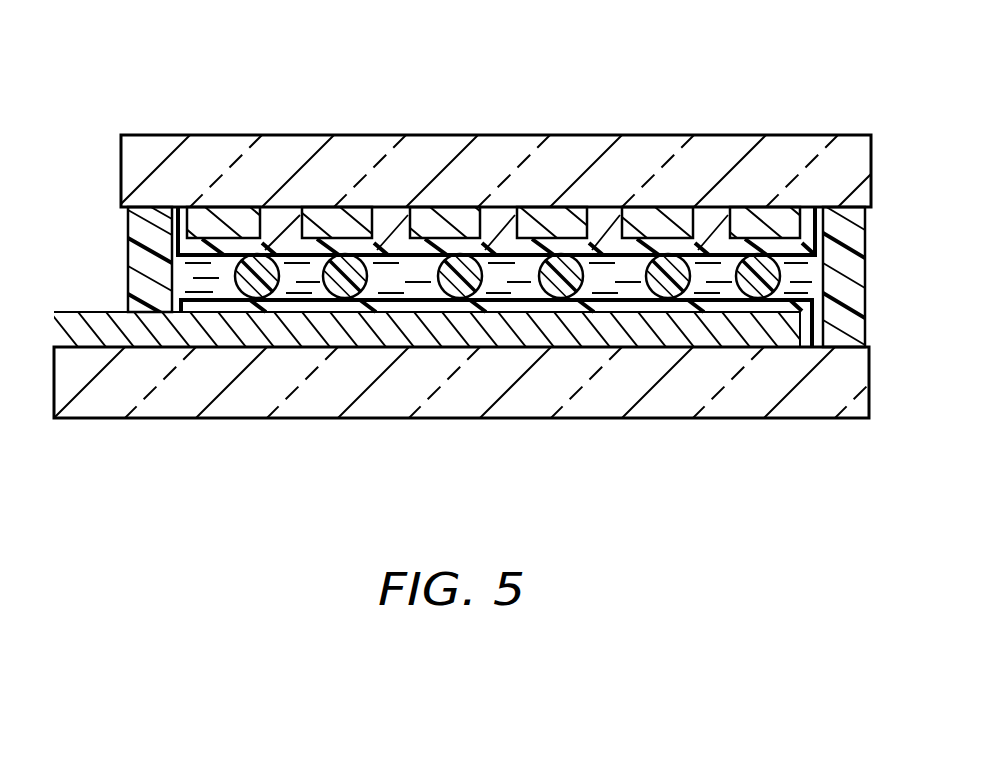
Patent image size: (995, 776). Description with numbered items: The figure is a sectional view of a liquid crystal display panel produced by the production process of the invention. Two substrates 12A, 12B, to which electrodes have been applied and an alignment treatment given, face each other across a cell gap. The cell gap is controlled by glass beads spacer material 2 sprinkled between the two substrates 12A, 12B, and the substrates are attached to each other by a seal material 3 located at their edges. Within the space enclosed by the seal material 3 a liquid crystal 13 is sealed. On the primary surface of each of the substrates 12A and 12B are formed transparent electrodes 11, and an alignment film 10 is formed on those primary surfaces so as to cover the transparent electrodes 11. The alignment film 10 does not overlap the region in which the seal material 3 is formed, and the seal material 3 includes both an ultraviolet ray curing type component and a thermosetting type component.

The spacer material 2 is at (258, 300).
The seal material 3 is at (147, 288).
The alignment film 10 is at (717, 217).
The transparent electrodes 11 is at (768, 210).
The substrate 12A is at (390, 150).
The substrate 12B is at (398, 385).
The liquid crystal 13 is at (608, 277).